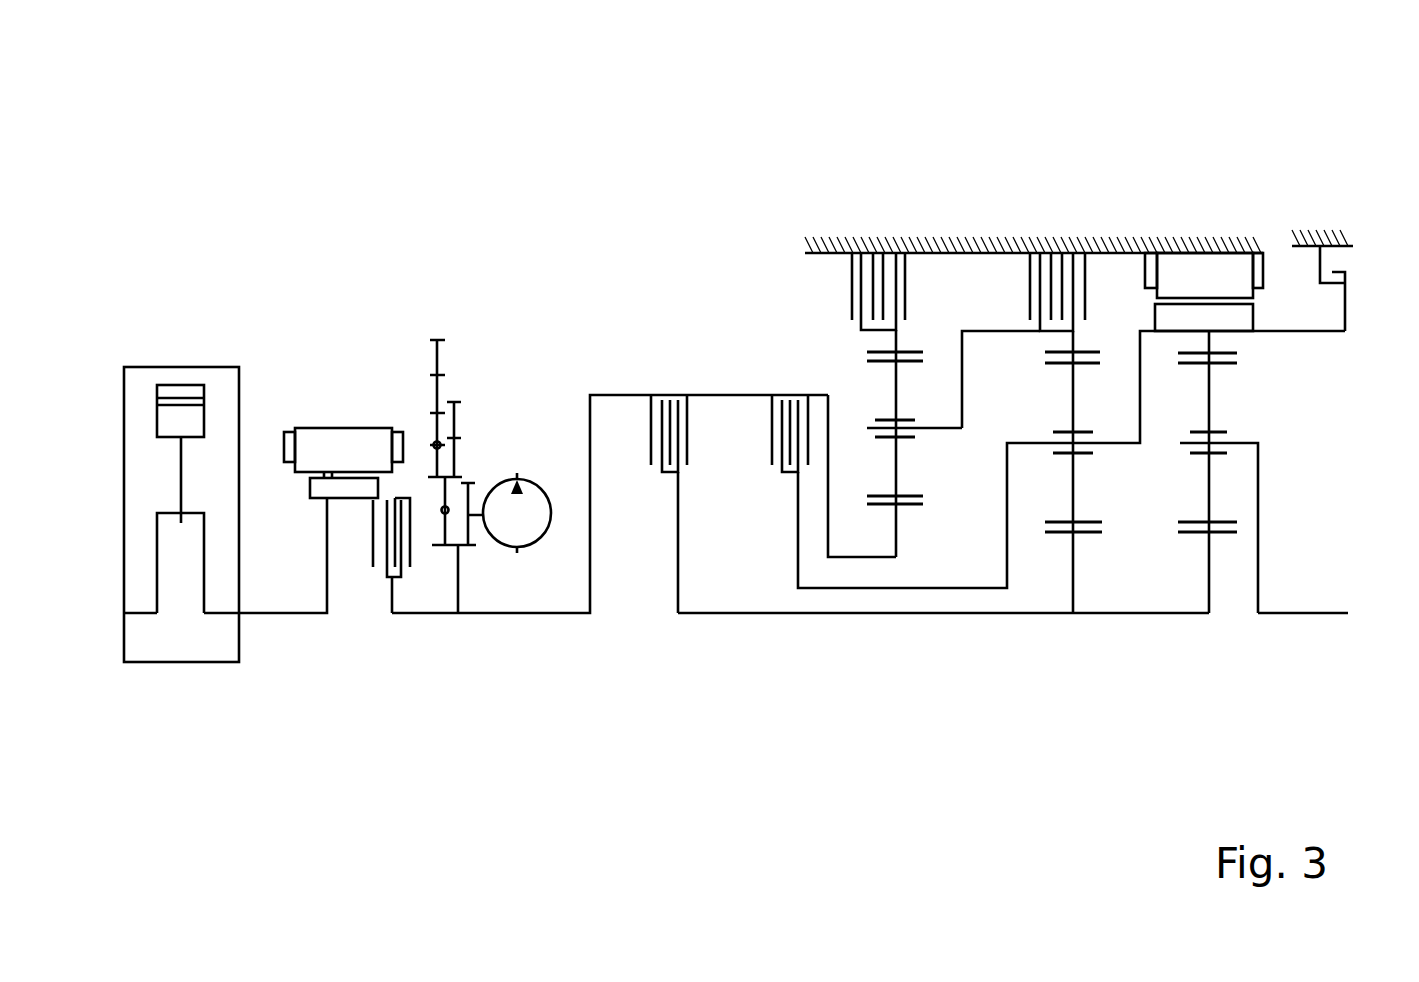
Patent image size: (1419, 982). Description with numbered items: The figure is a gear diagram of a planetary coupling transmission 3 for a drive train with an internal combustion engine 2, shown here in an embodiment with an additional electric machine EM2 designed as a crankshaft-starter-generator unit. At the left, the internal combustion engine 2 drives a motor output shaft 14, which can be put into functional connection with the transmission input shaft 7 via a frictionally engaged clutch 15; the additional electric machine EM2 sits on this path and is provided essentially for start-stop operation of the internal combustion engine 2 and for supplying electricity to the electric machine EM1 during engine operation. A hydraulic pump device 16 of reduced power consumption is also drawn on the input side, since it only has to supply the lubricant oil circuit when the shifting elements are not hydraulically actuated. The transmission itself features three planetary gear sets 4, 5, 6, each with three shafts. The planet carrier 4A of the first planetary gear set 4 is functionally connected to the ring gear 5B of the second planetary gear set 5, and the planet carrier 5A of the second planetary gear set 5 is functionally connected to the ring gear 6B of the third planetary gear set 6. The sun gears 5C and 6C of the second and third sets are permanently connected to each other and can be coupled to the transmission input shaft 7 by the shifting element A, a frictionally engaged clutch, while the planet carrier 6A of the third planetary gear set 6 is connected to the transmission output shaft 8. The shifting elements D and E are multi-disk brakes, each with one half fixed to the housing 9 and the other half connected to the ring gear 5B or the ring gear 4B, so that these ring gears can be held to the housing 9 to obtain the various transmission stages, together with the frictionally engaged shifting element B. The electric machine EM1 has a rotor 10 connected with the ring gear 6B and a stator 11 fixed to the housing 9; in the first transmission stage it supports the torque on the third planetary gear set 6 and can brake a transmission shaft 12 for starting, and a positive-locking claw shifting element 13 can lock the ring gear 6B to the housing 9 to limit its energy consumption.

The internal combustion engine 2 is at (143, 398).
The planetary coupling transmission 3 is at (616, 261).
The first planetary gear set 4 is at (853, 535).
The planet carrier of the first planetary gear set 4A is at (942, 433).
The ring gear of the first planetary gear set 4B is at (877, 340).
The second planetary gear set 5 is at (1024, 568).
The planet carrier of the second planetary gear set 5A is at (1030, 440).
The ring gear of the second planetary gear set 5B is at (990, 331).
The sun gear of the second planetary gear set 5C is at (1073, 572).
The third planetary gear set 6 is at (1232, 591).
The planet carrier of the third planetary gear set 6A is at (1247, 433).
The ring gear of the third planetary gear set 6B is at (1145, 331).
The sun gear of the third planetary gear set 6C is at (1209, 583).
The transmission input shaft 7 is at (523, 614).
The transmission output shaft 8 is at (1320, 614).
The housing 9 is at (832, 259).
The rotor 10 is at (1237, 320).
The stator 11 is at (1178, 267).
The transmission shaft 12 is at (833, 562).
The positive-locking shifting element 13 is at (1352, 283).
The motor output shaft 14 is at (273, 614).
The frictionally engaged clutch 15 is at (393, 578).
The hydraulic pump device 16 is at (528, 503).
The electric machine EM1 is at (1260, 254).
The additional electric machine EM2 is at (343, 447).
The shifting element A is at (669, 414).
The shifting element B is at (790, 414).
The shifting element D is at (878, 263).
The shifting element E is at (1057, 264).